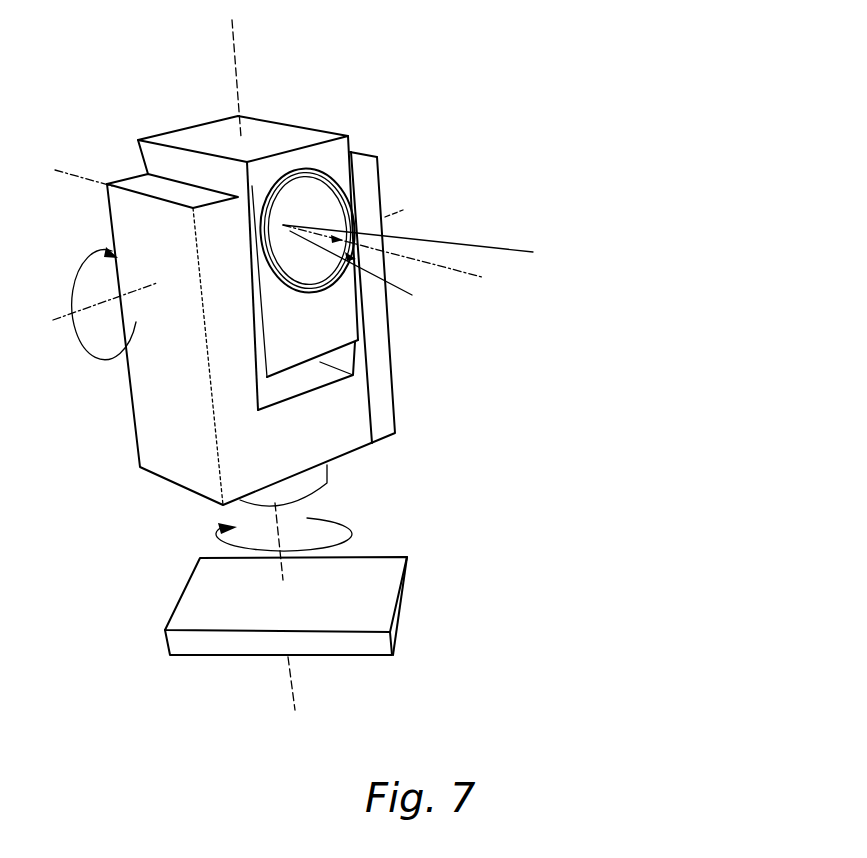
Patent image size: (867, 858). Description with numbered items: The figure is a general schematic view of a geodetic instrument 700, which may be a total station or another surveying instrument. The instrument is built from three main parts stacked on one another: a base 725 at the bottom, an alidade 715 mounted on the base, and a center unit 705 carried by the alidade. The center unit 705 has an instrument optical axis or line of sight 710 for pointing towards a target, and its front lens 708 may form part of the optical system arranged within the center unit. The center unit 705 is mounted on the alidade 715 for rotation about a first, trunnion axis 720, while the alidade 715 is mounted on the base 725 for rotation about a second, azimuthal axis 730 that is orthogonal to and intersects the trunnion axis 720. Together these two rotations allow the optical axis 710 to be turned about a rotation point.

The geodetic instrument 700 is at (93, 604).
The center unit 705 is at (328, 343).
The front lens 708 is at (316, 190).
The instrument optical axis 710 is at (68, 172).
The alidade 715 is at (322, 446).
The first (trunnion) axis 720 is at (68, 317).
The base 725 is at (367, 612).
The second (azimuthal) axis 730 is at (236, 58).